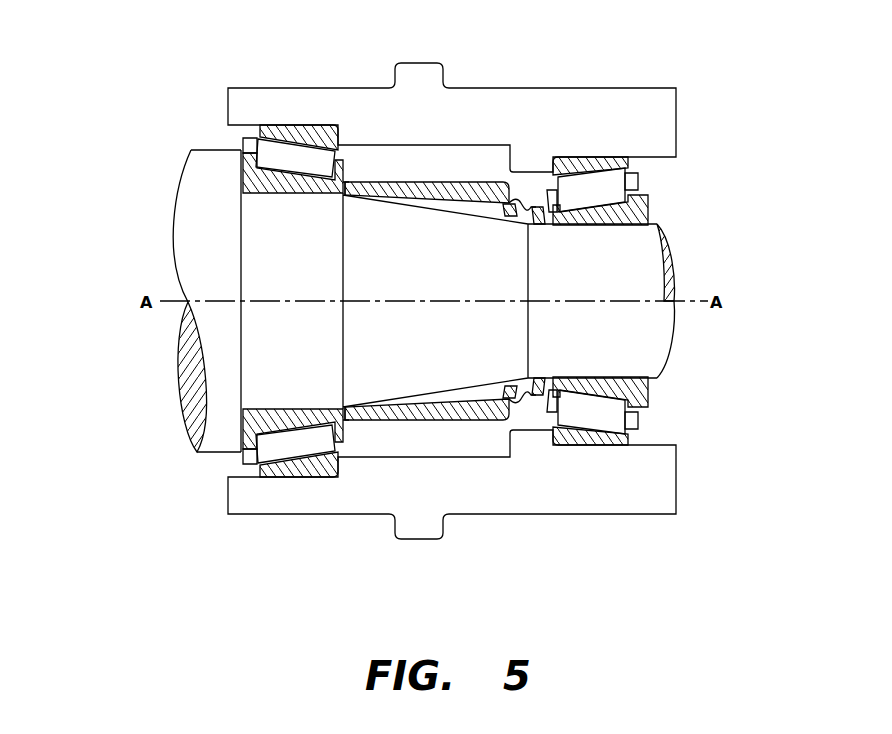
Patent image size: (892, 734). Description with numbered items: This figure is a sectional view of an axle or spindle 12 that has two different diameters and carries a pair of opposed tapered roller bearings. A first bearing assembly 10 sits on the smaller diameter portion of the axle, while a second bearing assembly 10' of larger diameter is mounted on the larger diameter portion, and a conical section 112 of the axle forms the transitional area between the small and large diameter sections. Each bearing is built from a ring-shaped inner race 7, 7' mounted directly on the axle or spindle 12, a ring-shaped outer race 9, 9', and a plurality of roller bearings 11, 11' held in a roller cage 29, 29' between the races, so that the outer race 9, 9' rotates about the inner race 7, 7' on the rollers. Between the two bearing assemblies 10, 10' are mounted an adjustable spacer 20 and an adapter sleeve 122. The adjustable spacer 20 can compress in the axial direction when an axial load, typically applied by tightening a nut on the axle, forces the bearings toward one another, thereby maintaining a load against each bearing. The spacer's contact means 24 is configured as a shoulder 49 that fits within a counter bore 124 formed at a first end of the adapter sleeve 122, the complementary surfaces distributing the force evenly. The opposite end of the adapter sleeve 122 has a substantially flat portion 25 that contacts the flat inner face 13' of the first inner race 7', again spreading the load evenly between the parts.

The inner race 7 is at (658, 292).
The first inner race 7' is at (207, 301).
The outer race 9 is at (658, 251).
The outer race 9' is at (204, 267).
The first bearing assembly 10 is at (663, 251).
The second bearing assembly 10' is at (199, 267).
The roller bearings 11 is at (668, 286).
The roller bearings 11' is at (196, 298).
The axle or spindle 12 is at (659, 257).
The inner face 13' is at (381, 260).
The adjustable spacer 20 is at (528, 412).
The contact means 24 is at (480, 400).
The substantially flat portion 25 is at (342, 197).
The roller cage 29 is at (661, 263).
The roller cage 29' is at (156, 280).
The shoulder 49 is at (510, 207).
The conical section 112 is at (400, 360).
The adapter sleeve 122 is at (421, 425).
The counter bore 124 is at (478, 197).